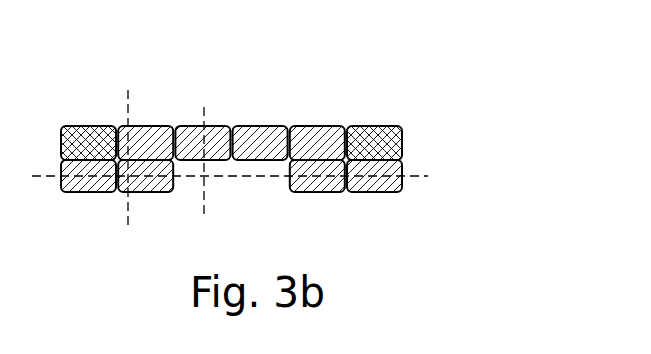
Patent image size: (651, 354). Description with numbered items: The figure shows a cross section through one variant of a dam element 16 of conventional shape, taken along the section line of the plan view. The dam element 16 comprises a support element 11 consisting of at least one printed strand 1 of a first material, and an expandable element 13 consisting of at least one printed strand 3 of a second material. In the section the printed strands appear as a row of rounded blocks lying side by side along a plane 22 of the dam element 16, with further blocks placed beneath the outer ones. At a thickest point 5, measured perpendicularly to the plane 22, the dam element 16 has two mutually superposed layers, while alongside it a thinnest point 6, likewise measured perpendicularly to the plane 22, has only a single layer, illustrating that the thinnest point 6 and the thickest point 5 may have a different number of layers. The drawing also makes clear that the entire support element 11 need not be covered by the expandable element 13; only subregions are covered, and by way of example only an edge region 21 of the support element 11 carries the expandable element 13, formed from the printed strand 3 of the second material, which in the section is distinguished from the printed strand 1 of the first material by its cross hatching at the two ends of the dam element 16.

The printed strand 1 is at (221, 124).
The printed strand 3 is at (386, 124).
The thickest point 5 is at (131, 213).
The thinnest point 6 is at (204, 197).
The support element 11 is at (160, 126).
The expandable element 13 is at (82, 126).
The dam element 16 is at (210, 90).
The edge region 21 is at (379, 191).
The plane 22 is at (52, 178).